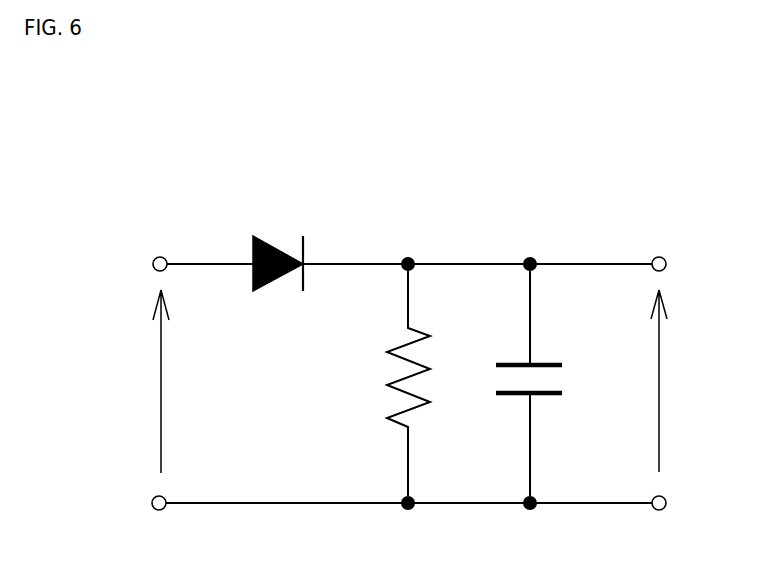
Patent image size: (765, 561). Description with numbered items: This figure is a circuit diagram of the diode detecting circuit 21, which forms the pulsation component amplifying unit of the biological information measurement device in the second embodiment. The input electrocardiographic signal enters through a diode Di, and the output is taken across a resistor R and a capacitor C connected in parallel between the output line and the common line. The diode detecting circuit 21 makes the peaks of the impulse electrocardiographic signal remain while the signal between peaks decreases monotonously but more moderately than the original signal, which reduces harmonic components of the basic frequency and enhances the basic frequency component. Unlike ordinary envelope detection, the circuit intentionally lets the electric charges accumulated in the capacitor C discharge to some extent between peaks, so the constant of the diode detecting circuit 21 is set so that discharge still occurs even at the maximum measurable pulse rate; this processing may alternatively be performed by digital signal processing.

The diode detecting circuit 21 is at (412, 201).
The diode Di is at (278, 286).
The resistor R is at (424, 383).
The capacitor C is at (545, 383).